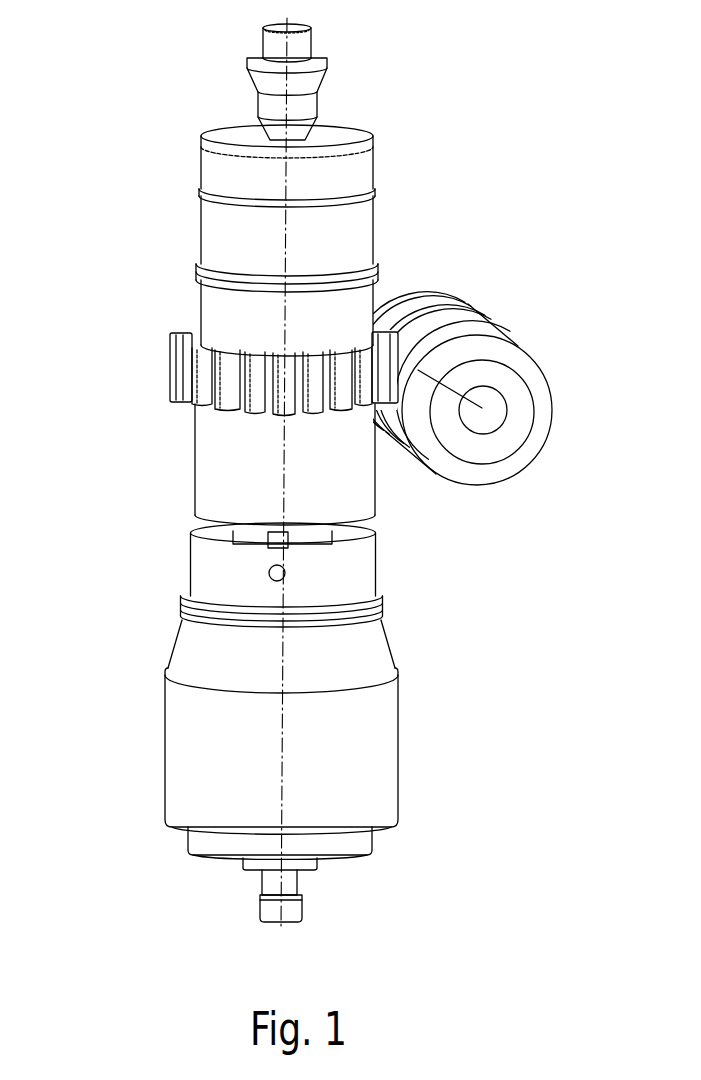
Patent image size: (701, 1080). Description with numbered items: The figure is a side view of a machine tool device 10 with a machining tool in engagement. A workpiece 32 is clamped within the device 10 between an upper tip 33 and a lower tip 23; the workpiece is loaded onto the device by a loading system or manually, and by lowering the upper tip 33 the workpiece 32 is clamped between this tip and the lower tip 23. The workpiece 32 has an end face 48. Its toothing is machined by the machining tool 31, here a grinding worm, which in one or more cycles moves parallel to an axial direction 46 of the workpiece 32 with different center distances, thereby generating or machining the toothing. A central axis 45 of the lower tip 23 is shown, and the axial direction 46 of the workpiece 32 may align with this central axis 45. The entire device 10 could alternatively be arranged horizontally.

The device 10 is at (383, 757).
The lower tip 23 is at (297, 878).
The machining tool 31 is at (535, 408).
The workpiece 32 is at (357, 230).
The upper tip 33 is at (297, 103).
The central axis 45 is at (161, 784).
The axial direction 46 is at (280, 743).
The end face 48 is at (222, 892).